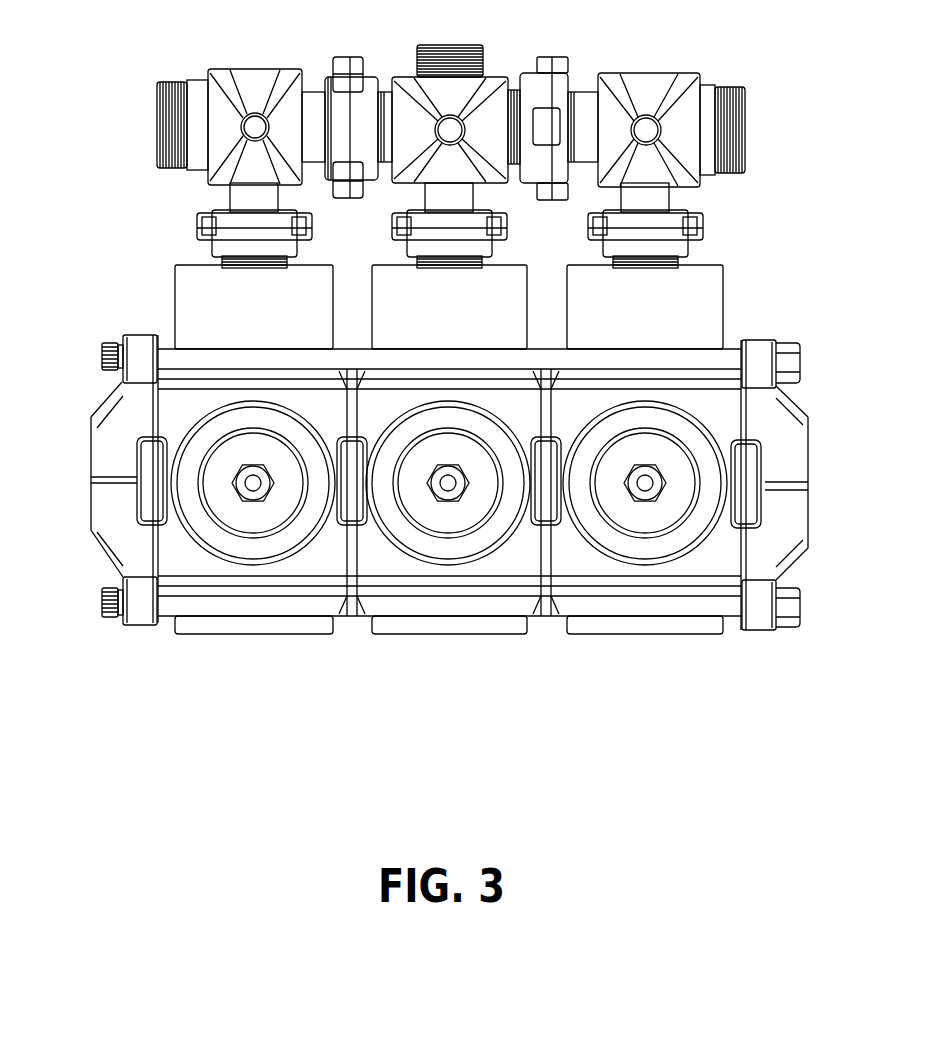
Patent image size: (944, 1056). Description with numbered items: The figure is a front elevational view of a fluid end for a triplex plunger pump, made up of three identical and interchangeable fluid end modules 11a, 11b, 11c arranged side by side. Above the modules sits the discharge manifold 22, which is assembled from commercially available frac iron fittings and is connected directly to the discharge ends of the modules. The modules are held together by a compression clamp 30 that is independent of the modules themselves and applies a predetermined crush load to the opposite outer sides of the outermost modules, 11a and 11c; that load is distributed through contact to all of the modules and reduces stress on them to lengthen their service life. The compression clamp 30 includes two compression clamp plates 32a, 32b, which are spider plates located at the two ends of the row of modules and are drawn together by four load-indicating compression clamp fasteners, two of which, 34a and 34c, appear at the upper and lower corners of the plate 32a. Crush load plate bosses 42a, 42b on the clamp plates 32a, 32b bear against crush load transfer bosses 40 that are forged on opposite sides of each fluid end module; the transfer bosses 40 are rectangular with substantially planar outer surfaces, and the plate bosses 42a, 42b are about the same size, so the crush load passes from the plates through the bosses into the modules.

The discharge manifold 22 is at (652, 66).
The fluid end module 11a is at (229, 322).
The fluid end module 11b is at (428, 322).
The fluid end module 11c is at (623, 322).
The compression clamp 30 is at (820, 450).
The compression clamp plate 32a is at (91, 460).
The compression clamp plate 32b is at (852, 488).
The compression clamp fastener 34a is at (102, 365).
The compression clamp fastener 34c is at (102, 603).
The crush load transfer boss 40 is at (160, 490).
The crush load plate boss 42a is at (147, 511).
The crush load plate boss 42b is at (748, 508).